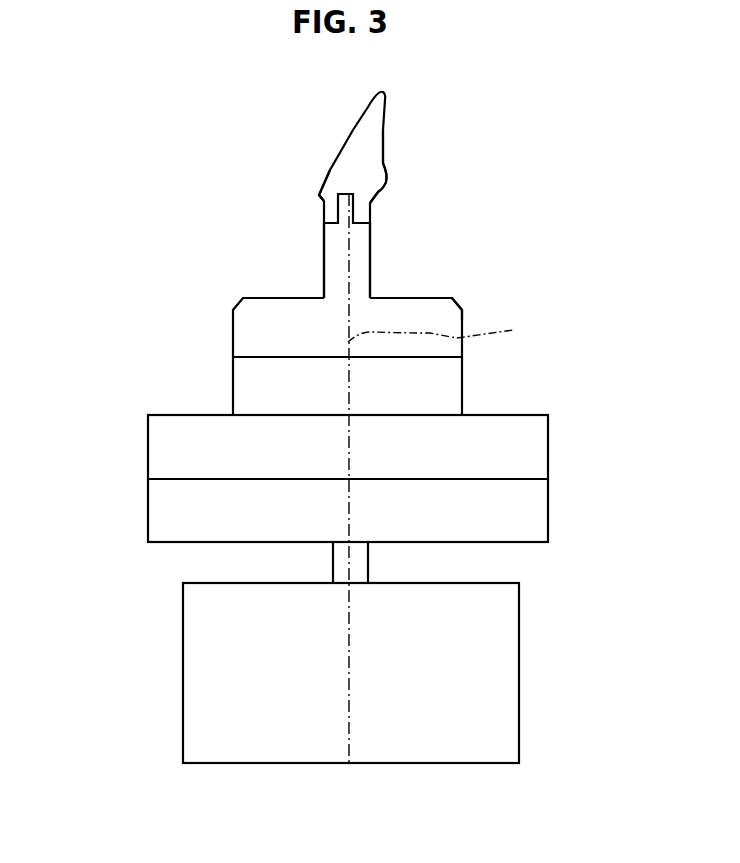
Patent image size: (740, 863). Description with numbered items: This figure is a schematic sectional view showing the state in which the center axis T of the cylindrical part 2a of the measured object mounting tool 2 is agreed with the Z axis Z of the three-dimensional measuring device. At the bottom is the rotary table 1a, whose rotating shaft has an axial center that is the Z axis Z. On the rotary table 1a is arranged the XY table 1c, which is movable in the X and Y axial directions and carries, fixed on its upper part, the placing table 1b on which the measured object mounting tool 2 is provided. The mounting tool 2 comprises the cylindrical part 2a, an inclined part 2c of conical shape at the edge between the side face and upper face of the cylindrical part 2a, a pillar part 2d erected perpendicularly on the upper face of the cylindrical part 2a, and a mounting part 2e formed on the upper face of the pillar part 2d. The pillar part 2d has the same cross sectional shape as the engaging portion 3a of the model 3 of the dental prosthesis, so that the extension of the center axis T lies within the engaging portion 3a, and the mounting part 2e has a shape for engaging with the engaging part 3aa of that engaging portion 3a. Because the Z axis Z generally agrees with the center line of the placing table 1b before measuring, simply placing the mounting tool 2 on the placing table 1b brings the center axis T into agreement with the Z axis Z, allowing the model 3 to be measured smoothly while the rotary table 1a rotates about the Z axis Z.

The rotary table 1a is at (503, 665).
The placing table 1b is at (437, 386).
The XY table 1c is at (165, 448).
The measured object mounting tool 2 is at (335, 275).
The cylindrical part 2a is at (242, 323).
The inclined part 2c is at (460, 302).
The pillar part 2d is at (332, 267).
The mounting part 2e is at (338, 212).
The model of the dental prosthesis 3 is at (405, 138).
The engaging portion 3a is at (363, 213).
The engaging part 3aa is at (324, 201).
The center axis T is at (445, 329).
The Z axis Z is at (353, 730).